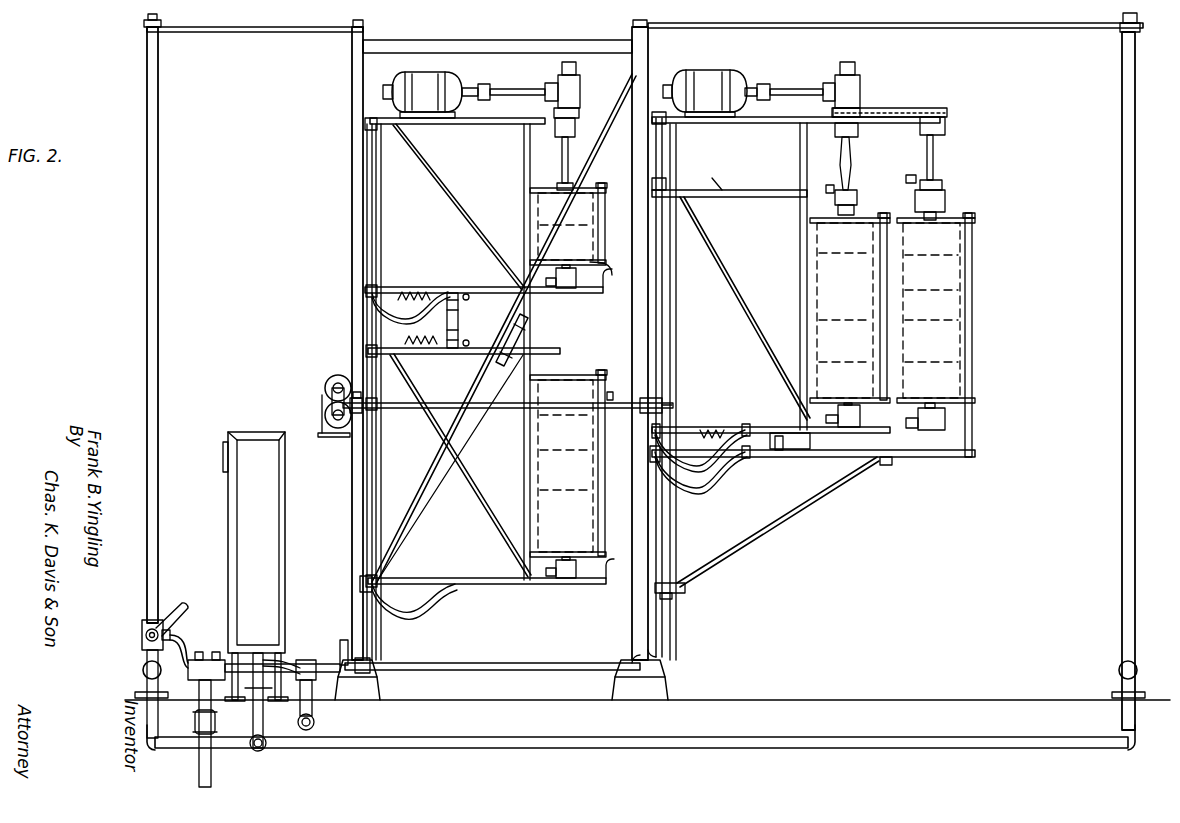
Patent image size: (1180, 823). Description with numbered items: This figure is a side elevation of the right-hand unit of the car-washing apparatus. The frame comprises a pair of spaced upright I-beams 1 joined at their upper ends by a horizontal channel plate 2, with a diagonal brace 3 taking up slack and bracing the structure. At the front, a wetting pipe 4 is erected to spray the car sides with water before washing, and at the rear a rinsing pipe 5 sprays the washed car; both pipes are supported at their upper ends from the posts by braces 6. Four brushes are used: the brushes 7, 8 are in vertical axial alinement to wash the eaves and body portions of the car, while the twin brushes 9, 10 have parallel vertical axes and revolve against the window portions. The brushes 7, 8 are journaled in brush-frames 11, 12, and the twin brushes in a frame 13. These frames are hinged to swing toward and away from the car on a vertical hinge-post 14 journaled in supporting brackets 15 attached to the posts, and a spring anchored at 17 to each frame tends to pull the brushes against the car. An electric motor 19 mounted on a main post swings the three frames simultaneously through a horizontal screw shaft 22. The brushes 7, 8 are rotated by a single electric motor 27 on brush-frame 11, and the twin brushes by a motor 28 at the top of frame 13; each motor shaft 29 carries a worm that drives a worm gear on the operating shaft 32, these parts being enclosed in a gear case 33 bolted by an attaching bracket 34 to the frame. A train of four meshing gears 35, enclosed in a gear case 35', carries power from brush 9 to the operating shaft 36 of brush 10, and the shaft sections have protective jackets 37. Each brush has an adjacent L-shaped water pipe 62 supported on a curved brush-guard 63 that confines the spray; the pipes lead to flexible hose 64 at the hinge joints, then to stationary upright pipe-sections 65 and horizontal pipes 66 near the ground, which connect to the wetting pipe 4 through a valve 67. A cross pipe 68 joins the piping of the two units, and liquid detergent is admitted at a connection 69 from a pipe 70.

The upright I-beam 1 is at (355, 76).
The channel plate 2 is at (490, 40).
The diagonal brace 3 is at (425, 498).
The wetting pipe 4 is at (147, 74).
The rinsing pipe 5 is at (1136, 150).
The brace 6 is at (205, 27).
The brush 7 is at (721, 370).
The brush 8 is at (608, 398).
The twin brush 9 is at (817, 304).
The twin brush 10 is at (972, 292).
The brush-frame 11 is at (486, 125).
The brush-frame 12 is at (452, 355).
The frame 13 is at (762, 197).
The hinge-post 14 is at (375, 222).
The supporting bracket 15 is at (370, 126).
The spring anchor 17 is at (434, 302).
The electric motor 19 is at (325, 408).
The screw shaft 22 is at (498, 409).
The electric motor 27 is at (422, 95).
The electric motor 28 is at (705, 83).
The motor shaft 29 is at (503, 89).
The operating shaft 32 is at (562, 160).
The gear case 33 is at (580, 90).
The attaching bracket 34 is at (520, 97).
The meshing gears 35 is at (903, 97).
The gear case 35' is at (925, 104).
The operating shaft 36 is at (935, 160).
The jacket 37 is at (842, 162).
The water pipe 62 is at (997, 345).
The brush-guard 63 is at (540, 197).
The hose 64 is at (728, 484).
The upright pipe-section 65 is at (366, 520).
The horizontal pipe 66 is at (460, 670).
The valve 67 is at (160, 620).
The cross pipe 68 is at (665, 748).
The connection 69 is at (194, 658).
The pipe 70 is at (200, 775).